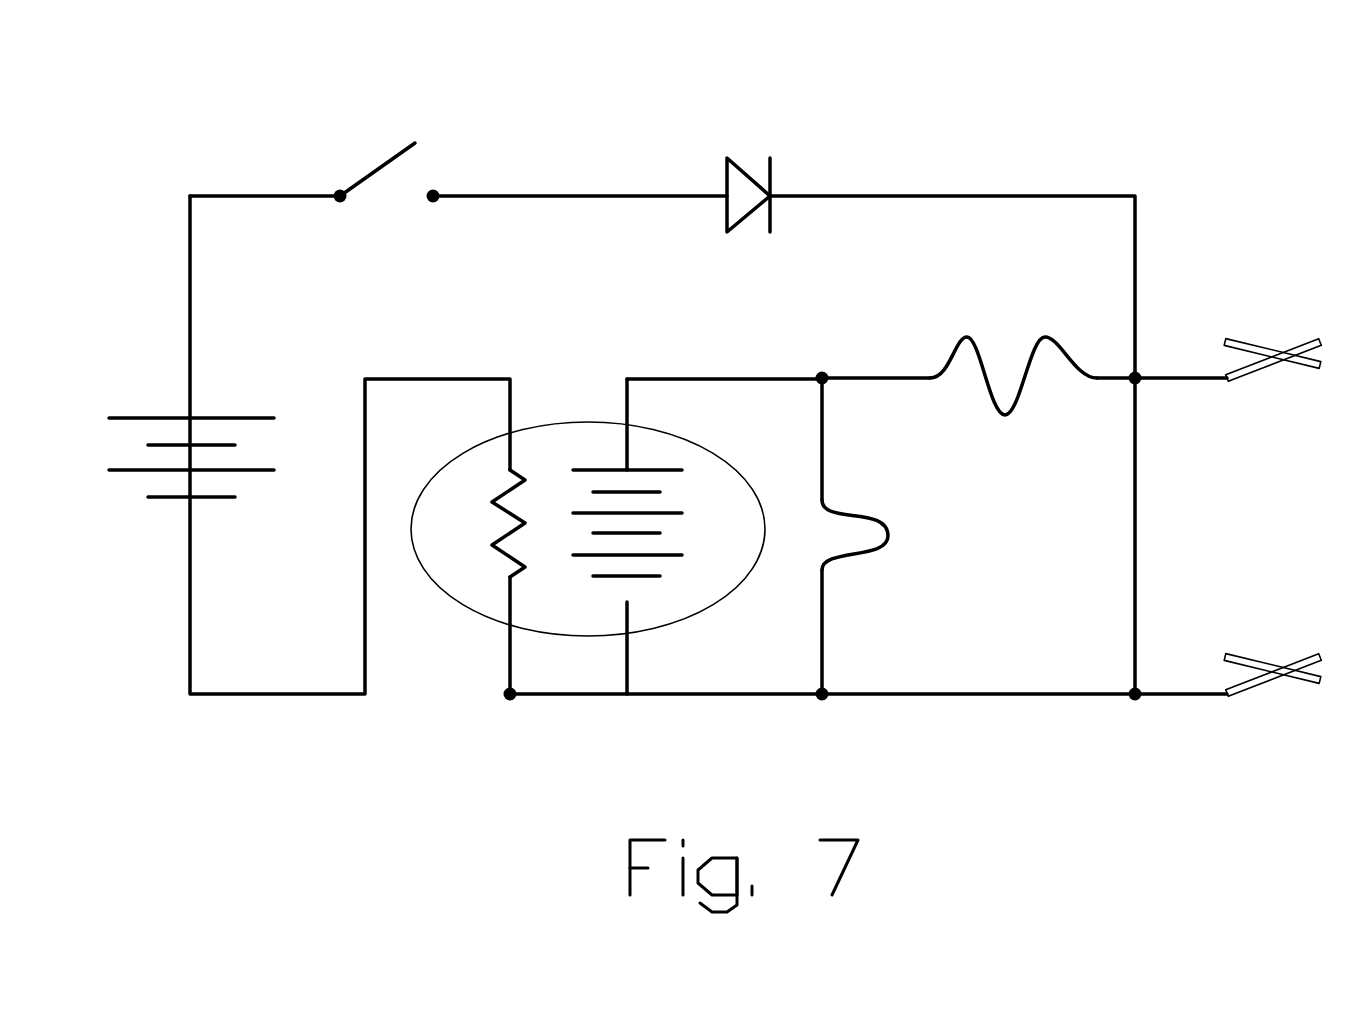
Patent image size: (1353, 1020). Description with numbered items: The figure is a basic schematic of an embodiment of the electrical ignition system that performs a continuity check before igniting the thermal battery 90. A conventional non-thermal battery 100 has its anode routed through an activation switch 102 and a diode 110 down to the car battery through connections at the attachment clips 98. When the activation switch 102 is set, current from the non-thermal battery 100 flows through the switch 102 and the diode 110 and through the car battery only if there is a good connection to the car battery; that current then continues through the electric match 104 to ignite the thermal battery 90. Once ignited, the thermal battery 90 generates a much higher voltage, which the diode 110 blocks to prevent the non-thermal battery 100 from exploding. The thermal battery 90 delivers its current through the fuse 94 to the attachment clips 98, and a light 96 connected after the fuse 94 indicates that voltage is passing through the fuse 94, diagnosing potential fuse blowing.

The thermal battery 90 is at (681, 588).
The fuse 94 is at (990, 326).
The light 96 is at (892, 573).
The attachment clips 98 is at (1146, 661).
The non-thermal battery 100 is at (214, 385).
The activation switch 102 is at (436, 149).
The electric match 104 is at (494, 578).
The diode 110 is at (760, 144).